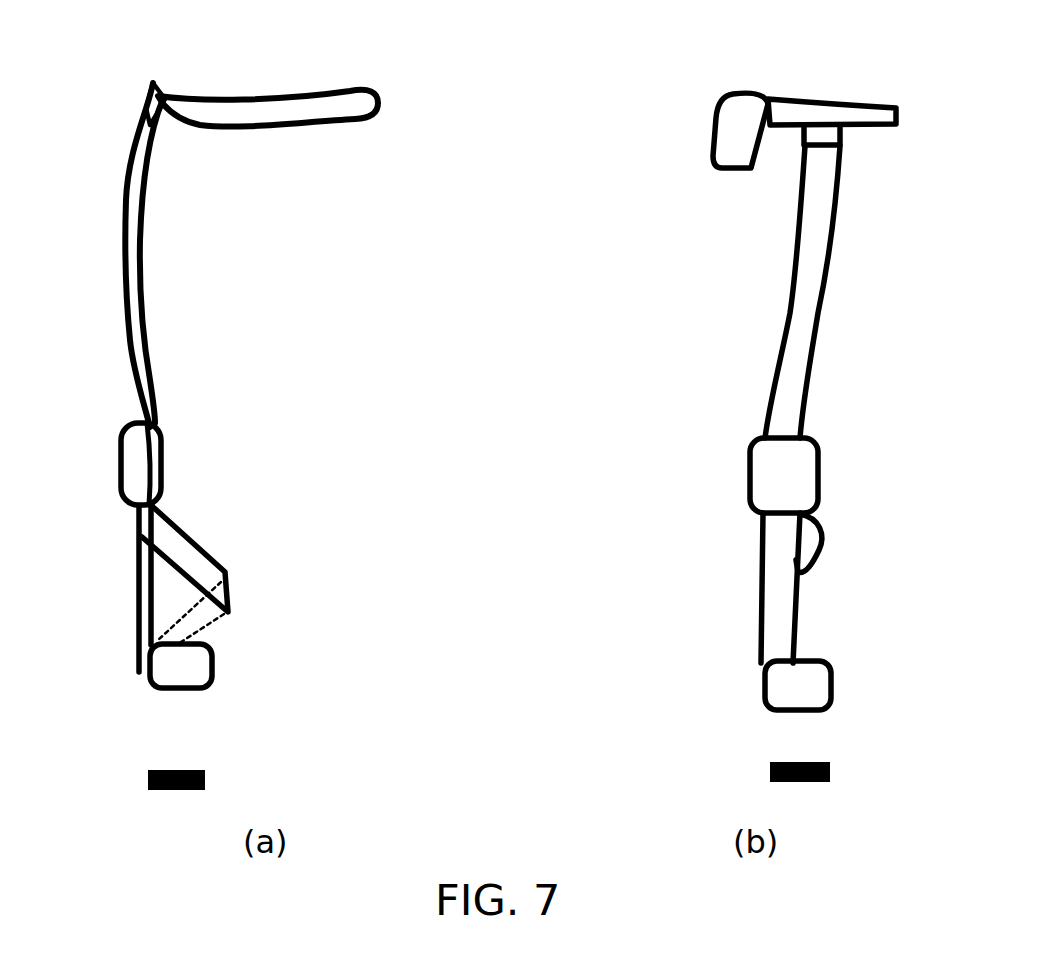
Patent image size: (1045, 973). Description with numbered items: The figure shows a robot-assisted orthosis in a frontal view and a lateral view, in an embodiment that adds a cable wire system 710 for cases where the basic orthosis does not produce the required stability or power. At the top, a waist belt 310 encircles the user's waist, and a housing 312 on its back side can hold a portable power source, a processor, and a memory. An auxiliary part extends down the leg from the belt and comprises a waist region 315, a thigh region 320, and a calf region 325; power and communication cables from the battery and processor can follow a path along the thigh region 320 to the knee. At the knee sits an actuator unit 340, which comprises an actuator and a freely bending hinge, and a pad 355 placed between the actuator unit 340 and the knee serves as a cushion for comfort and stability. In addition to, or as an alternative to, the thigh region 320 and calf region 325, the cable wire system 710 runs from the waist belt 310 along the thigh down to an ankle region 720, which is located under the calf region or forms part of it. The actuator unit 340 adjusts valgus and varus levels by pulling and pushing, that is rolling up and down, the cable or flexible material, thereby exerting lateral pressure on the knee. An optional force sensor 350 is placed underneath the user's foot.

The waist belt 310 is at (335, 88).
The housing 312 is at (718, 118).
The waist region 315 is at (150, 113).
The thigh region 320 is at (127, 283).
The calf region 325 is at (142, 628).
The actuator unit 340 is at (122, 477).
The force sensor 350 is at (207, 780).
The pad 355 is at (162, 462).
The cable wire system 710 is at (218, 557).
The ankle region 720 is at (212, 667).